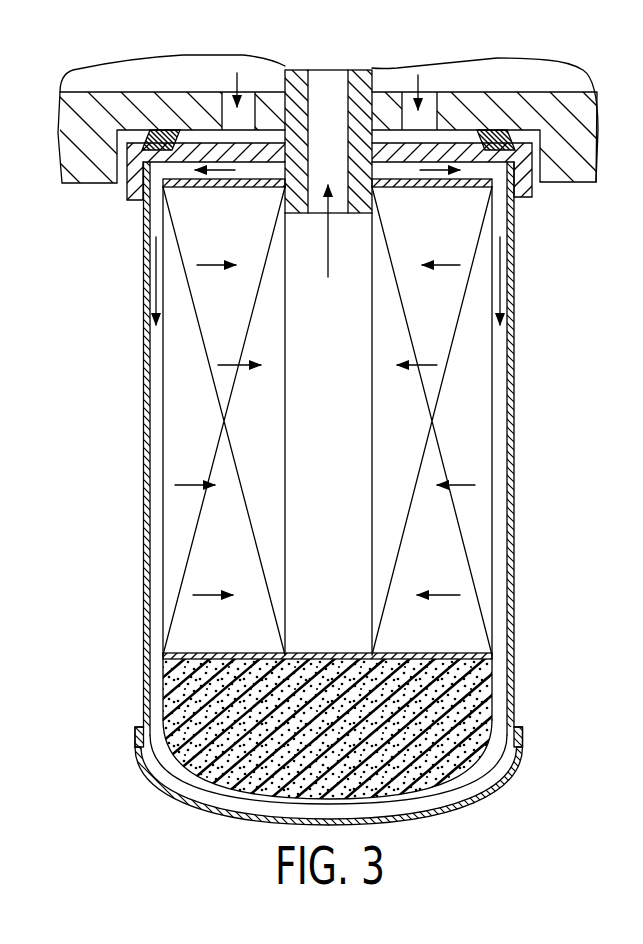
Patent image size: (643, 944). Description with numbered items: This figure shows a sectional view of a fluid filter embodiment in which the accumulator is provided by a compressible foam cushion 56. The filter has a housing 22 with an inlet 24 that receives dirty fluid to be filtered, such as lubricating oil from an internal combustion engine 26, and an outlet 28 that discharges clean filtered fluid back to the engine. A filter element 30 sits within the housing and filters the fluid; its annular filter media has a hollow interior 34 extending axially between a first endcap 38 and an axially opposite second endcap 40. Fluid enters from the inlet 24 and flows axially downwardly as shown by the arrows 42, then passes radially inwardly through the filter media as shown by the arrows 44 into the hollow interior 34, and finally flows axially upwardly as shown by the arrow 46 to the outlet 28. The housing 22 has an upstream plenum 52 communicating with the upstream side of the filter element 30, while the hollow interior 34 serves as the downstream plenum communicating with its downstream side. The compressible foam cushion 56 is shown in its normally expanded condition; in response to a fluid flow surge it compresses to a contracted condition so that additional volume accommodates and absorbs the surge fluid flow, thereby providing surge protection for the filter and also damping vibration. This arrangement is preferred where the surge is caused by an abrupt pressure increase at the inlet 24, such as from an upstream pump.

The housing 22 is at (142, 377).
The inlet 24 is at (427, 100).
The internal combustion engine 26 is at (556, 76).
The outlet 28 is at (330, 90).
The filter element 30 is at (160, 443).
The hollow interior 34 is at (337, 400).
The first endcap 38 is at (243, 188).
The second endcap 40 is at (250, 652).
The arrows (upstream flow path) 42 is at (510, 257).
The arrows (radially inward flow) 44 is at (438, 267).
The arrow (downstream flow path) 46 is at (327, 243).
The upstream plenum 52 is at (437, 800).
The compressible foam cushion 56 is at (510, 772).